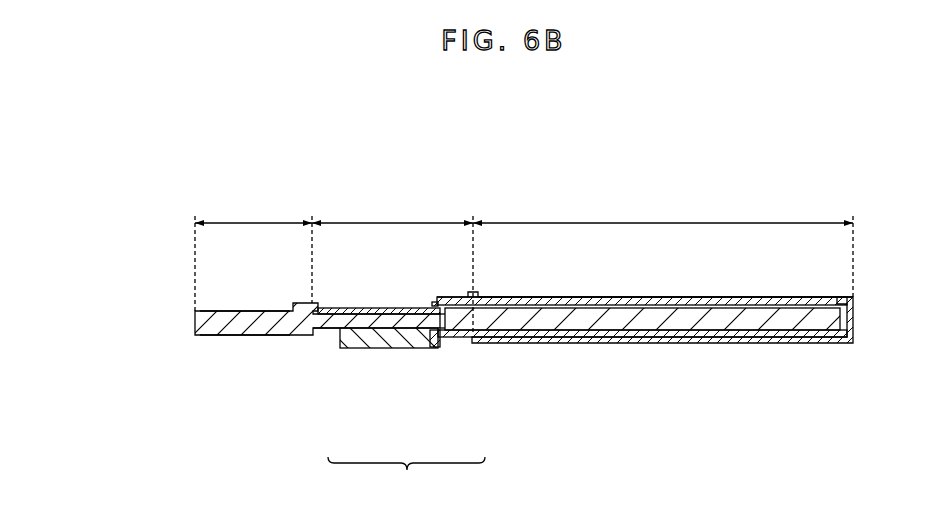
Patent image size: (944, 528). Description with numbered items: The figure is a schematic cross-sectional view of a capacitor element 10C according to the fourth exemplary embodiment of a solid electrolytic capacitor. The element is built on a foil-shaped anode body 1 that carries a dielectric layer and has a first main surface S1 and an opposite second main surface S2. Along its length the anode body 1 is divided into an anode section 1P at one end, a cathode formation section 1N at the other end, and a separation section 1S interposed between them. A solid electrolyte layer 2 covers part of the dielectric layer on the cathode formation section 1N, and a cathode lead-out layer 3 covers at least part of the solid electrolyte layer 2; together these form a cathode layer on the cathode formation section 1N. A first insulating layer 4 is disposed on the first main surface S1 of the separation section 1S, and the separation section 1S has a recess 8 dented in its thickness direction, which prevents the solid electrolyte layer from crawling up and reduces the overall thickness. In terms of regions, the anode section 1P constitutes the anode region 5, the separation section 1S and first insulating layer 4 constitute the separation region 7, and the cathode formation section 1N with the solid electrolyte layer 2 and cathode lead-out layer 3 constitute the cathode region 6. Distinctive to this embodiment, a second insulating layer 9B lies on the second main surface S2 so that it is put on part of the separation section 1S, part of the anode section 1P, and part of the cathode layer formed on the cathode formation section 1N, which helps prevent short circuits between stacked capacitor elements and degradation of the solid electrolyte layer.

The anode body 1 is at (406, 477).
The anode section 1P is at (267, 328).
The separation section 1S is at (457, 322).
The cathode formation section 1N is at (600, 321).
The solid electrolyte layer 2 is at (846, 306).
The cathode lead-out layer 3 is at (800, 297).
The first insulating layer 4 is at (375, 340).
The anode region 5 is at (253, 212).
The cathode region 6 is at (663, 212).
The separation region 7 is at (392, 212).
The recess 8 is at (324, 334).
The second insulating layer 9B is at (388, 307).
The capacitor element 10C is at (529, 212).
The first main surface S1 is at (239, 336).
The second main surface S2 is at (234, 309).